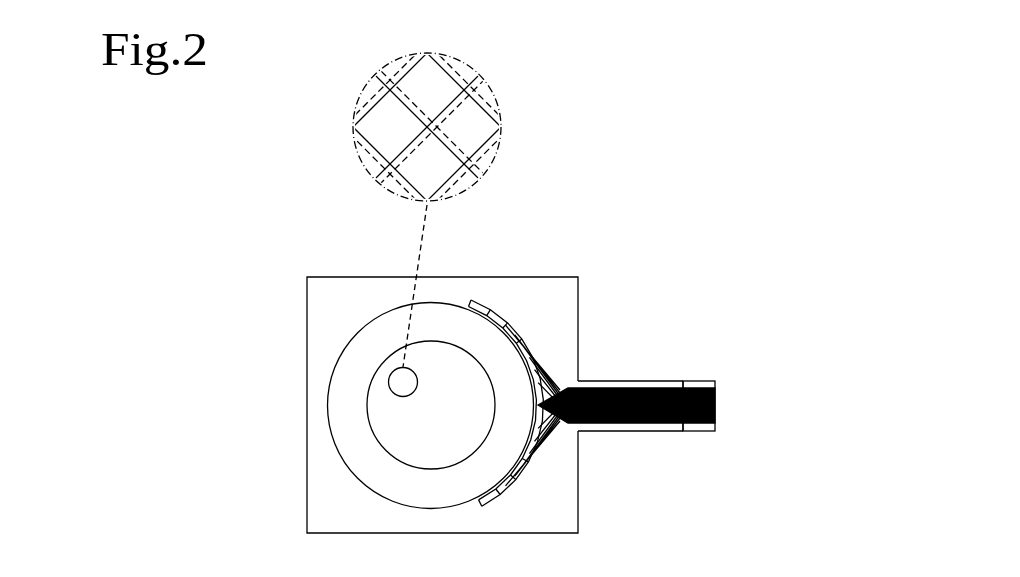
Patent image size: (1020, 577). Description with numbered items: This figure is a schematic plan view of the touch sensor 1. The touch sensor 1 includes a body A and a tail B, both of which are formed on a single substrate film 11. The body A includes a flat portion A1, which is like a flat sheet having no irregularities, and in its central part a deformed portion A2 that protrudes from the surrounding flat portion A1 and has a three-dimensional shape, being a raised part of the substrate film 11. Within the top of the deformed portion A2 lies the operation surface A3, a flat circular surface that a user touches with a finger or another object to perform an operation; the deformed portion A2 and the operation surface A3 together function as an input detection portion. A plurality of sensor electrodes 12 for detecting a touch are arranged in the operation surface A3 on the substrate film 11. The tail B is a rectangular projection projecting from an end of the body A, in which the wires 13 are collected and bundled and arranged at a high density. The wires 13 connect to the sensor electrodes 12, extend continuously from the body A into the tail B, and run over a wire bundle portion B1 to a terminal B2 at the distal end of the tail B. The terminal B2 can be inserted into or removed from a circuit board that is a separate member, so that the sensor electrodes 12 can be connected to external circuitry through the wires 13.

The touch sensor 1 is at (627, 248).
The substrate film 11 is at (307, 326).
The sensor electrodes 12 is at (362, 100).
The wires 13 is at (540, 352).
The body A is at (512, 277).
The flat portion A1 is at (328, 490).
The deformed portion A2 is at (380, 342).
The operation surface A3 is at (388, 426).
The tail B is at (665, 380).
The wire bundle portion B1 is at (630, 432).
The terminal B2 is at (692, 432).